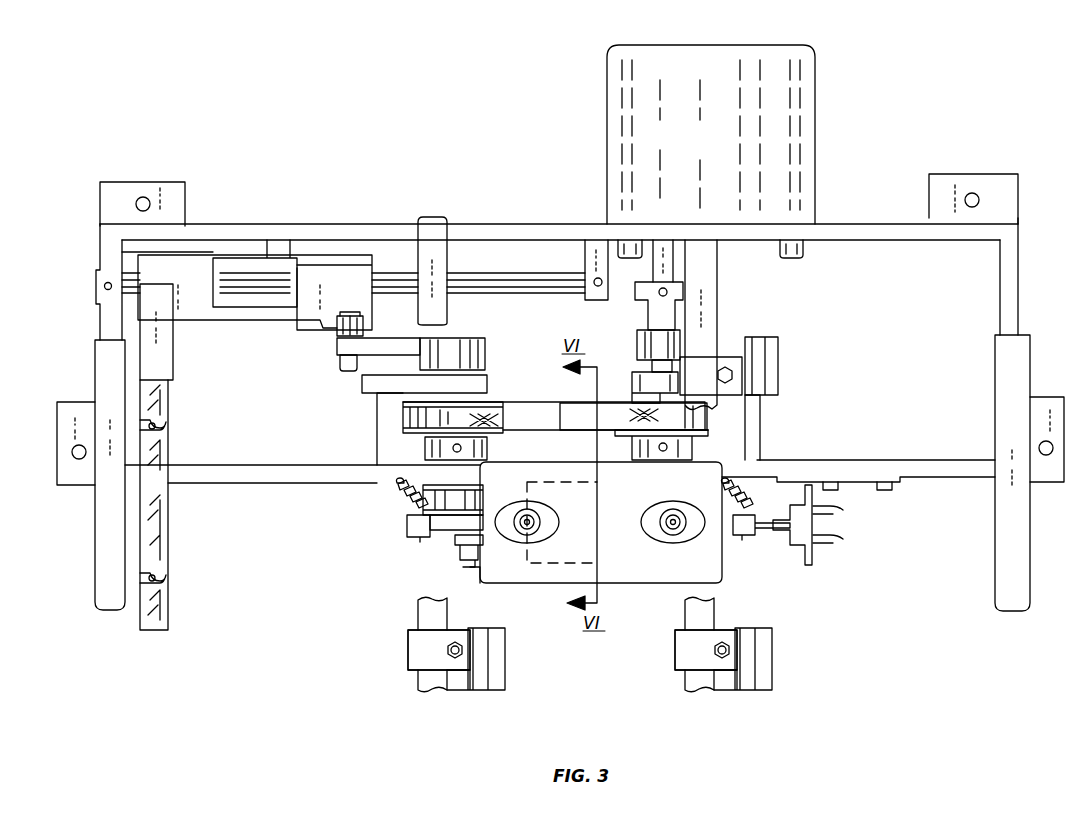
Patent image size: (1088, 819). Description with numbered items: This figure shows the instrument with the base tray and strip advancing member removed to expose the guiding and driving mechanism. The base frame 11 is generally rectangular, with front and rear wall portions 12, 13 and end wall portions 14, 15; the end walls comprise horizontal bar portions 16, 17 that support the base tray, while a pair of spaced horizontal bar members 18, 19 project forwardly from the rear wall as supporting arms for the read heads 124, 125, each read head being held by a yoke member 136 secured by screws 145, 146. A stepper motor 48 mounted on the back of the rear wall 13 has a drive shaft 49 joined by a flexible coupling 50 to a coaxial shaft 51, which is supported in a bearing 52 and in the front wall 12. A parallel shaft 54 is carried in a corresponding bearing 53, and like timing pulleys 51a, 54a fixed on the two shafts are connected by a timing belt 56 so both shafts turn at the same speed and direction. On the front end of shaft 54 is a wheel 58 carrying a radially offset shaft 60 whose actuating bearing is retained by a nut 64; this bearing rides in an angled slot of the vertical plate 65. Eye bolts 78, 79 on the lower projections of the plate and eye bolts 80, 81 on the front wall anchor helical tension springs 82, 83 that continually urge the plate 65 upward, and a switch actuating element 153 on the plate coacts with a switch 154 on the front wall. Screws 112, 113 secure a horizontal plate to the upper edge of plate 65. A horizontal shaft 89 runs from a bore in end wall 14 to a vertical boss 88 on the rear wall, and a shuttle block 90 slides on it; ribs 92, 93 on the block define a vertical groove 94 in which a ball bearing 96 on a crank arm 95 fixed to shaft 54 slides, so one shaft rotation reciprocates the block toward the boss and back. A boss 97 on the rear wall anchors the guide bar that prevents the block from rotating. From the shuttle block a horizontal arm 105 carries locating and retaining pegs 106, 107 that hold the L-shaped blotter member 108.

The base frame 11 is at (1030, 498).
The front wall portion 12 is at (256, 470).
The rear wall portion 13 is at (858, 222).
The end wall portion 14 is at (100, 258).
The end wall portion 15 is at (1018, 296).
The bar portion 16 is at (110, 536).
The bar portion 17 is at (1010, 567).
The horizontal bar member 18 is at (432, 220).
The horizontal bar member 19 is at (705, 298).
The stepper motor 48 is at (810, 86).
The drive shaft 49 is at (672, 272).
The flexible coupling 50 is at (637, 338).
The shaft 51 is at (652, 364).
The timing pulley 51a is at (705, 431).
The supporting bearing 52 is at (632, 377).
The supporting bearing 53 is at (487, 380).
The shaft 54 is at (489, 401).
The timing pulley 54a is at (378, 440).
The timing belt 56 is at (560, 428).
The wheel 58 is at (478, 500).
The offset shaft 60 is at (472, 580).
The nut 64 is at (468, 560).
The plate 65 is at (452, 532).
The eye bolt 78 is at (724, 502).
The eye bolt 79 is at (410, 532).
The eye bolt 80 is at (705, 466).
The eye bolt 81 is at (396, 486).
The helical tension spring 82 is at (735, 492).
The helical tension spring 83 is at (406, 506).
The vertical rib or boss 88 is at (590, 300).
The horizontal shaft 89 is at (125, 300).
The shuttle block 90 is at (216, 322).
The vertical rib 92 is at (366, 328).
The vertical rib 93 is at (318, 330).
The vertical groove 94 is at (358, 314).
The crank arm 95 is at (380, 352).
The ball type bearing 96 is at (340, 340).
The boss 97 is at (268, 248).
The horizontal arm 105 is at (170, 364).
The locating and retaining peg 106 is at (162, 428).
The locating and retaining peg 107 is at (164, 577).
The blotter member 108 is at (170, 514).
The screw 112 is at (532, 520).
The screw 113 is at (668, 523).
The read head 124 is at (503, 683).
The read head 125 is at (770, 683).
The yoke member 136 is at (698, 370).
The screw 145 is at (742, 372).
The screw 146 is at (500, 650).
The switch actuating element 153 is at (760, 538).
The switch 154 is at (795, 555).